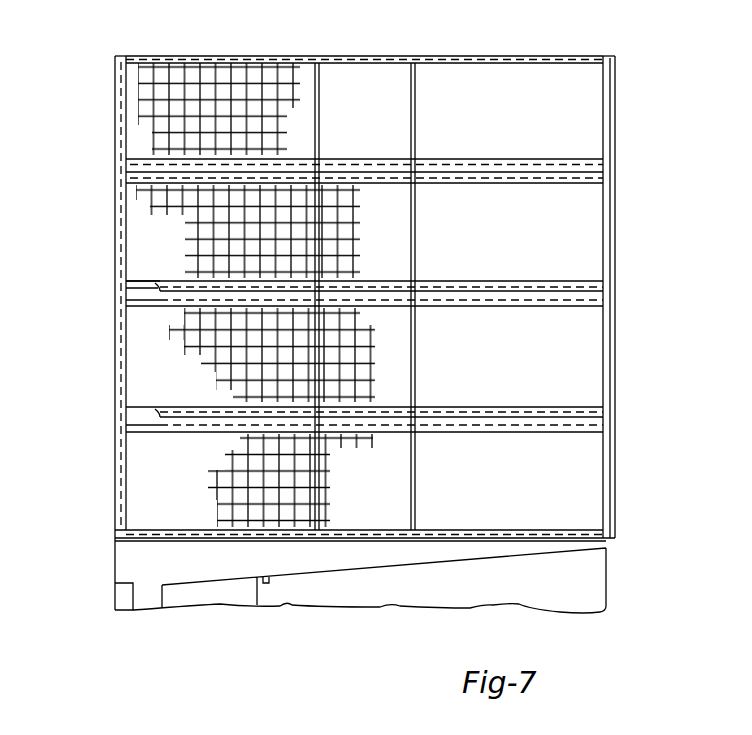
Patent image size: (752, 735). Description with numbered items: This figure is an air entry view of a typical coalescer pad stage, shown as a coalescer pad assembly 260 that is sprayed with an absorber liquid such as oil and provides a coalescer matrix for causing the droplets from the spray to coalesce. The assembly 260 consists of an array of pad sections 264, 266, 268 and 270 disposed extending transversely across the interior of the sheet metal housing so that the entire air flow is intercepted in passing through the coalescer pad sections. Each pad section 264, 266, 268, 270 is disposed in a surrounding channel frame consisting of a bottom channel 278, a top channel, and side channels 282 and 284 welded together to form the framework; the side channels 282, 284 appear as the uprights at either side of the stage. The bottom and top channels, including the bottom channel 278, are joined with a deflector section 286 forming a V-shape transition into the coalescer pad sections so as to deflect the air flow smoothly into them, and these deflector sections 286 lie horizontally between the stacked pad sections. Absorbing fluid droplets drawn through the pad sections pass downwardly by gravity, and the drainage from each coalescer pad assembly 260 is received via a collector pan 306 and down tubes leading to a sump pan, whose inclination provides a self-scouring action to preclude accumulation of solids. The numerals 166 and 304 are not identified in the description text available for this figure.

The cabinet door assembly 166 is at (105, 97).
The coalescer pad assembly 260 is at (209, 14).
The side channel 282 is at (124, 55).
The side channel 284 is at (612, 68).
The pad section 264 is at (137, 130).
The pad section 266 is at (138, 238).
The pad section 268 is at (138, 373).
The pad section 270 is at (130, 480).
The bottom channel 278 is at (125, 290).
The deflector section 286 is at (595, 165).
The base plate 304 is at (320, 572).
The collector pan 306 is at (133, 600).